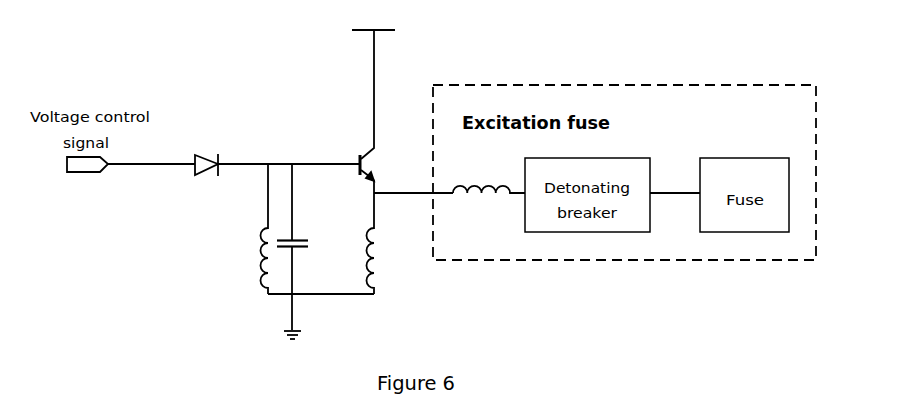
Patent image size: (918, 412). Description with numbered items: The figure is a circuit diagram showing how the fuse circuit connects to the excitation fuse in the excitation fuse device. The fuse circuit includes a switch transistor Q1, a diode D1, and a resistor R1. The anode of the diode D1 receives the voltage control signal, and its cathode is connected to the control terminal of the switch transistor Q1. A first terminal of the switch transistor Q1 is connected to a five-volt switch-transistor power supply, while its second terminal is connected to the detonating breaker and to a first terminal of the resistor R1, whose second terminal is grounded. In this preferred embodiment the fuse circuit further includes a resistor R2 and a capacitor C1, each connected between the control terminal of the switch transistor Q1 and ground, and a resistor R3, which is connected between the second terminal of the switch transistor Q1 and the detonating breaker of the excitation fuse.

The diode D1 is at (206, 156).
The switch transistor Q1 is at (363, 97).
The resistor R1 is at (383, 237).
The resistor R2 is at (242, 229).
The resistor R3 is at (489, 176).
The capacitor C1 is at (304, 247).